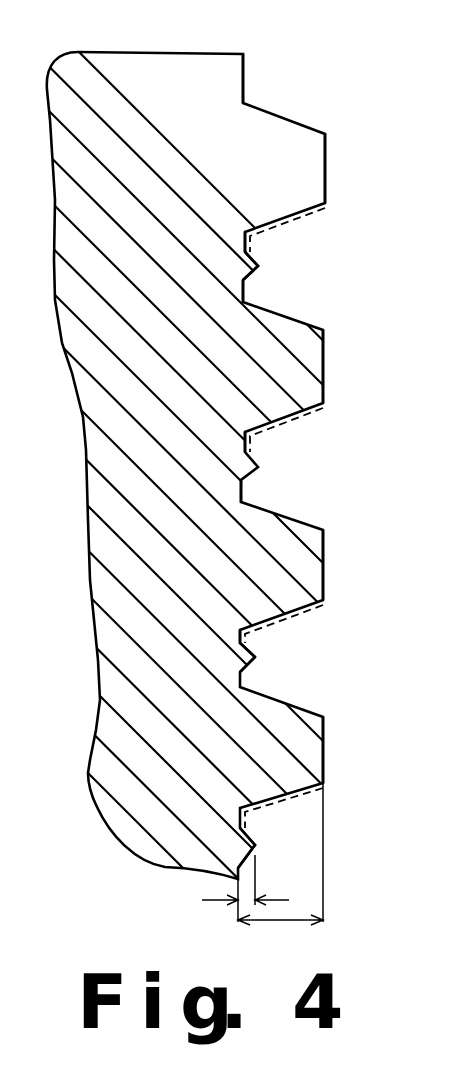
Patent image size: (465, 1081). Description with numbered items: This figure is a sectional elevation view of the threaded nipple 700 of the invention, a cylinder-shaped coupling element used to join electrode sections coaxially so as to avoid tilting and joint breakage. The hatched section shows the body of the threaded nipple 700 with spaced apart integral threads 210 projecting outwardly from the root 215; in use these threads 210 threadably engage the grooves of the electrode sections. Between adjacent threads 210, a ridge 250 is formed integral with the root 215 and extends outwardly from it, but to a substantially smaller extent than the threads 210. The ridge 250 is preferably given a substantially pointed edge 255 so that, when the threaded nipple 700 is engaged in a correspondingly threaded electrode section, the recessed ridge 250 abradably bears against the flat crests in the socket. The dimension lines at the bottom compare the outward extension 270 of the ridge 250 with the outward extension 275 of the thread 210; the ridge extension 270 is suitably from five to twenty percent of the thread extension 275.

The threaded nipple 700 is at (147, 110).
The threads 210 is at (325, 160).
The root 215 is at (245, 78).
The ridge 250 is at (250, 290).
The pointed edge 255 is at (252, 272).
The outward extension of ridge 270 is at (233, 902).
The outward extension of thread 275 is at (277, 922).